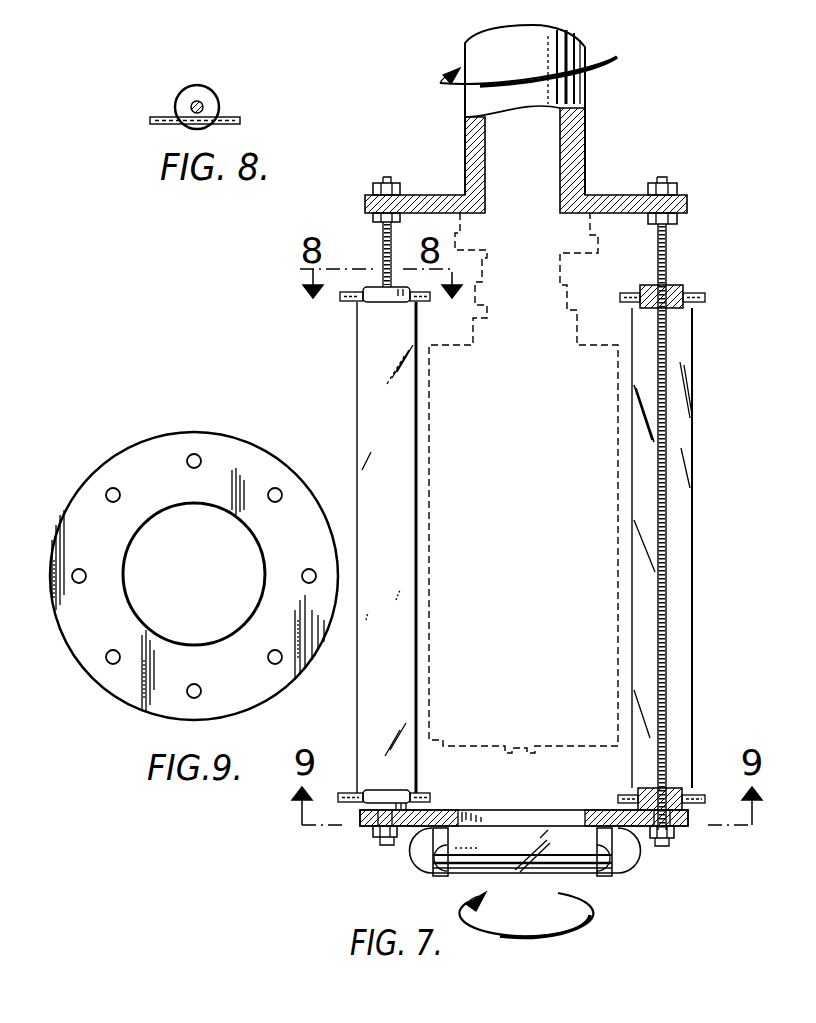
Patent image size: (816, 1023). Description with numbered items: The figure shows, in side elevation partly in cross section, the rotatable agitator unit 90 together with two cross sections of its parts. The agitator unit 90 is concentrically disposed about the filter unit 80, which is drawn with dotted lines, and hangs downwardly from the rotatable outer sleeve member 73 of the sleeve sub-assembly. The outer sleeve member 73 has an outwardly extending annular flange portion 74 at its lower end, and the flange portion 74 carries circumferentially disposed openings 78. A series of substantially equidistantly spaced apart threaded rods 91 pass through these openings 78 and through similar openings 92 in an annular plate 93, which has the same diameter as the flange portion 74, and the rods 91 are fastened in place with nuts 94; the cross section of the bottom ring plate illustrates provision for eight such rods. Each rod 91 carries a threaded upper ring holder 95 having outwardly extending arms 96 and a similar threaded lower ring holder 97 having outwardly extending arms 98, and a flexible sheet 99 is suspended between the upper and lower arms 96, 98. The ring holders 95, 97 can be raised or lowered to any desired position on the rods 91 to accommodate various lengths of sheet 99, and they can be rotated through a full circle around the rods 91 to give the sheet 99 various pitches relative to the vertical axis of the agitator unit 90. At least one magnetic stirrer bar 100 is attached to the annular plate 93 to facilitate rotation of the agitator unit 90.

In FIG. 7, the rotatable outer sleeve member 73 is at (588, 97).
In FIG. 7, the annular flange portion 74 is at (438, 193).
In FIG. 7, the circumferentially disposed openings 78 is at (687, 201).
In FIG. 7, the filter unit 80 is at (538, 438).
In FIG. 7, the agitator unit 90 is at (341, 397).
In FIG. 7, the threaded rods 91 is at (383, 177).
In FIG. 8, the threaded rods 91 is at (192, 100).
In FIG. 7, the openings 92 is at (380, 813).
In FIG. 9, the openings 92 is at (114, 489).
In FIG. 7, the annular plate 93 is at (513, 810).
In FIG. 9, the annular plate 93 is at (229, 437).
In FIG. 7, the nuts 94 is at (373, 218).
In FIG. 7, the threaded upper ring holder 95 is at (681, 285).
In FIG. 8, the threaded upper ring holder 95 is at (213, 92).
In FIG. 7, the outwardly extending arms 96 is at (704, 293).
In FIG. 8, the outwardly extending arms 96 is at (165, 117).
In FIG. 7, the threaded lower ring holder 97 is at (673, 789).
In FIG. 7, the outwardly extending arms 98 is at (637, 799).
In FIG. 7, the flexible sheet 99 is at (363, 460).
In FIG. 7, the magnetic stirrer bar 100 is at (633, 867).